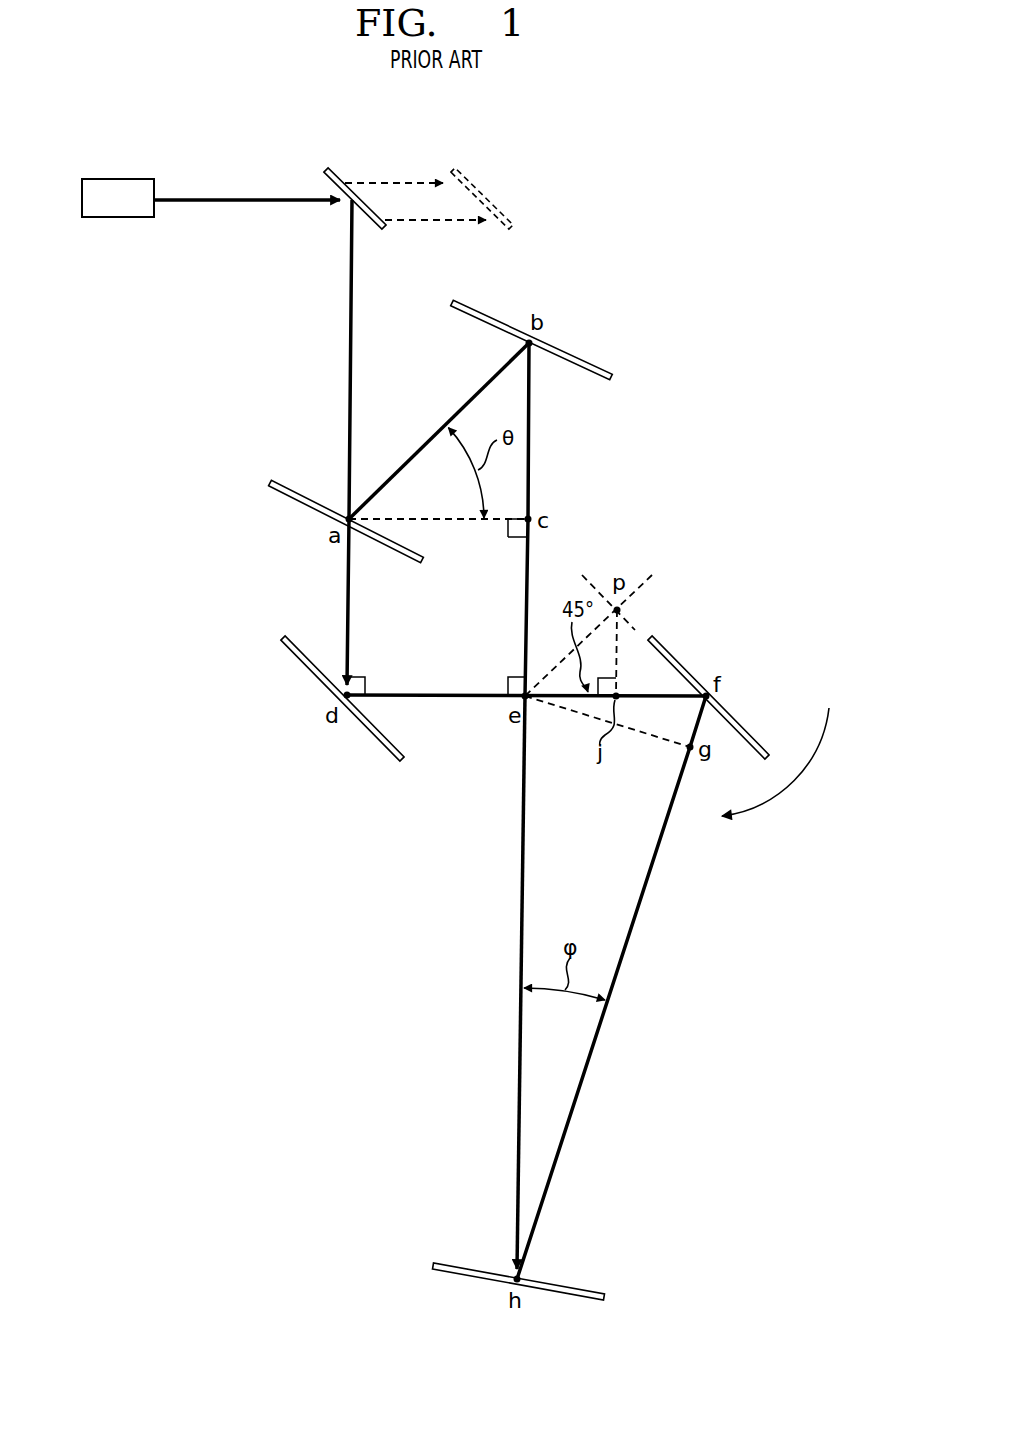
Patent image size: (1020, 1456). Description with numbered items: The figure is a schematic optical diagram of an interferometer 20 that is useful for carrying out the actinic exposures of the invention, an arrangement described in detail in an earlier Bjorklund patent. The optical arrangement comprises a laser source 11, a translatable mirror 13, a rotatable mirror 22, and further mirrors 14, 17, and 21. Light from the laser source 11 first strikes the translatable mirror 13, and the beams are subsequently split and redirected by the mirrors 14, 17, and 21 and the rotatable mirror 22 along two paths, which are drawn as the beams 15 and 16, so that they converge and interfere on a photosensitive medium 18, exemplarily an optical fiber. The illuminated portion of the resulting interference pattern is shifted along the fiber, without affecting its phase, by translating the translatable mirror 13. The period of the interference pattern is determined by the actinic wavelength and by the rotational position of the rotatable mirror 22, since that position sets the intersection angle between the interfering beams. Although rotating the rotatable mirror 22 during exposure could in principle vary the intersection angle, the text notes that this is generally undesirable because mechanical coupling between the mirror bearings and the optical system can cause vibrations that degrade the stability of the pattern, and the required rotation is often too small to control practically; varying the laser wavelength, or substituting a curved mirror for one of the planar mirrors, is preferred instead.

The laser source 11 is at (118, 220).
The translatable mirror 13 is at (328, 165).
The mirror 14 is at (268, 482).
The light beam (first path) 15 is at (467, 398).
The light beam (second path) 16 is at (347, 592).
The mirror 17 is at (596, 367).
The photosensitive medium 18 is at (440, 1265).
The interferometer 20 is at (663, 198).
The mirror 21 is at (300, 657).
The rotatable mirror 22 is at (752, 734).